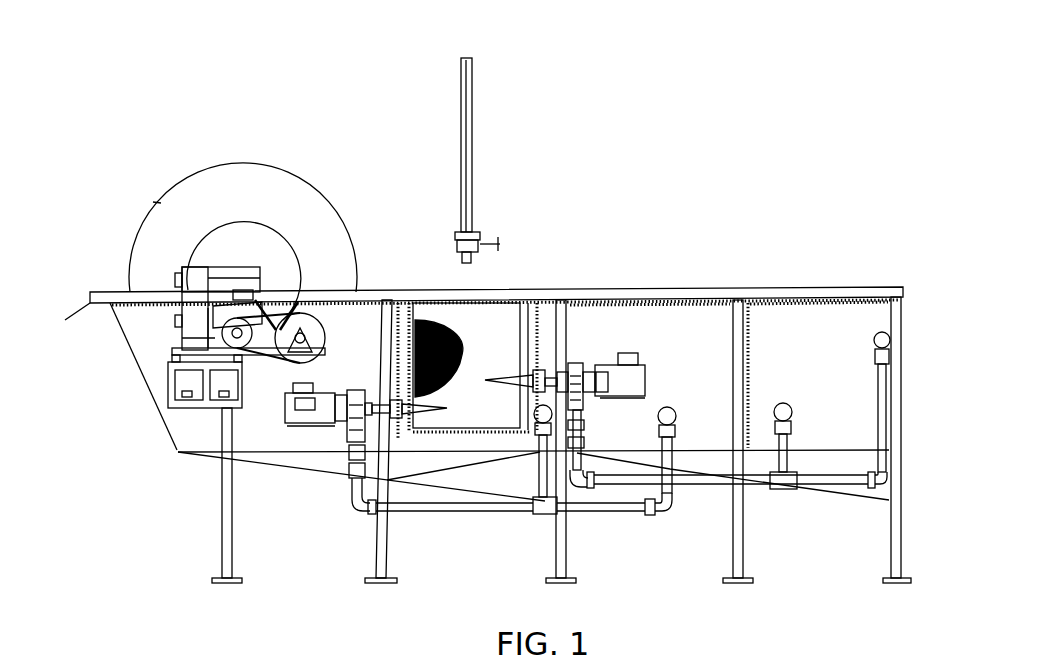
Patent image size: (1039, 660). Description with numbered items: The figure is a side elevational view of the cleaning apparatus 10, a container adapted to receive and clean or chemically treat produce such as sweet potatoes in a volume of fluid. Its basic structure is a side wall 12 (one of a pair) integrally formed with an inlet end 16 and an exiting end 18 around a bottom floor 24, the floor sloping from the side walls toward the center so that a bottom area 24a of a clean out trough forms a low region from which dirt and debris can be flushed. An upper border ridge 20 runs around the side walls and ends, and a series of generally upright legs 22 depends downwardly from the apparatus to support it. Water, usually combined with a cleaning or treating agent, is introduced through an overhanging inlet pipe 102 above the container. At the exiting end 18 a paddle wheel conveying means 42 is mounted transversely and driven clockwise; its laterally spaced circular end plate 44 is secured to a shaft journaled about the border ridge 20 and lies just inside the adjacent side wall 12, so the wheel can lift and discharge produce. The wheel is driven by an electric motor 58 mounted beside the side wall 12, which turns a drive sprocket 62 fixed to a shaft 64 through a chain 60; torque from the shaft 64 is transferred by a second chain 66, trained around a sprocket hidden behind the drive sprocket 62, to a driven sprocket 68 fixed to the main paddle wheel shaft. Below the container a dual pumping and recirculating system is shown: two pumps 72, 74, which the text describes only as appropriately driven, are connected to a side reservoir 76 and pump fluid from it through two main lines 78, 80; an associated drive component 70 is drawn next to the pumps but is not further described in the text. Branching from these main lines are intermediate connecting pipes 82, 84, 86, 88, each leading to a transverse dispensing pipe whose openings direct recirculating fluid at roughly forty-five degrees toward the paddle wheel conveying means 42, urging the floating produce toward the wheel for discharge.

The cleaning apparatus 10 is at (635, 178).
The side wall 12 is at (703, 330).
The inlet end 16 is at (899, 416).
The exiting end 18 is at (129, 376).
The upper border ridge 20 is at (484, 276).
The legs 22 is at (551, 454).
The bottom floor 24 is at (511, 481).
The bottom area 24a is at (638, 516).
The paddle wheel conveying means 42 is at (317, 160).
The circular end plate 44 is at (244, 203).
The electric motor 58 is at (152, 362).
The chain 60 is at (273, 293).
The drive sprocket 62 is at (300, 338).
The shaft 64 is at (473, 339).
The second chain 66 is at (273, 283).
The driven sprocket 68 is at (203, 269).
The motor 70 is at (606, 307).
The pump 72 is at (271, 432).
The pump 74 is at (650, 312).
The side reservoir 76 is at (539, 299).
The main line 78 is at (510, 504).
The main line 80 is at (727, 476).
The intermediate connecting pipe 82 is at (532, 508).
The intermediate connecting pipe 84 is at (732, 371).
The intermediate connecting pipe 86 is at (818, 360).
The intermediate connecting pipe 88 is at (909, 394).
The overhanging inlet pipe 102 is at (504, 133).